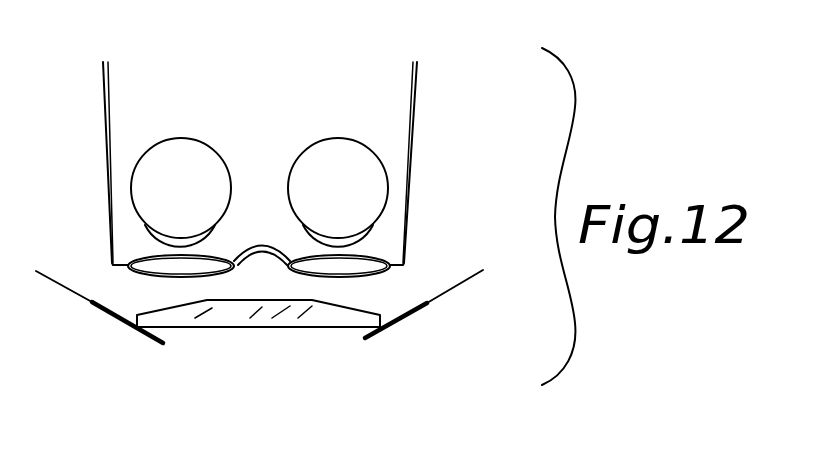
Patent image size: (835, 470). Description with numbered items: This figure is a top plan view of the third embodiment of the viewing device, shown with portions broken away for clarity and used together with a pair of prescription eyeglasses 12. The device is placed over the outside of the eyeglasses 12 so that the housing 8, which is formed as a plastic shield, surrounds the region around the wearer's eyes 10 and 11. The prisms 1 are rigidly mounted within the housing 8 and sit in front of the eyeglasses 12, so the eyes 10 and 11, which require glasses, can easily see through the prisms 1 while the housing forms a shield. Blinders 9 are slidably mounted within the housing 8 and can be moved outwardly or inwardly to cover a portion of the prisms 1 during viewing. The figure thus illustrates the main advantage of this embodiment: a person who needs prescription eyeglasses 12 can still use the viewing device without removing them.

The prism 1 is at (240, 328).
The housing 8 is at (150, 338).
The blinder 9 is at (53, 282).
The eye 10 is at (183, 152).
The eye 11 is at (317, 143).
The prescription eyeglasses 12 is at (412, 147).